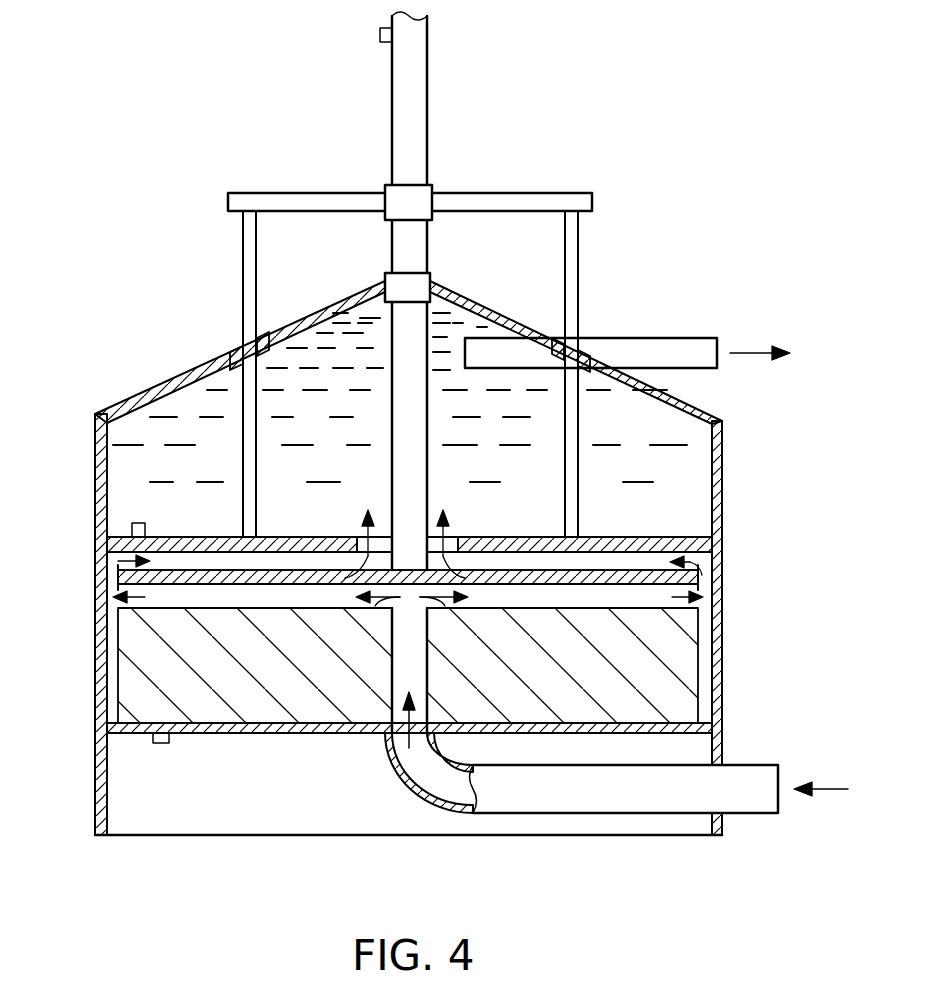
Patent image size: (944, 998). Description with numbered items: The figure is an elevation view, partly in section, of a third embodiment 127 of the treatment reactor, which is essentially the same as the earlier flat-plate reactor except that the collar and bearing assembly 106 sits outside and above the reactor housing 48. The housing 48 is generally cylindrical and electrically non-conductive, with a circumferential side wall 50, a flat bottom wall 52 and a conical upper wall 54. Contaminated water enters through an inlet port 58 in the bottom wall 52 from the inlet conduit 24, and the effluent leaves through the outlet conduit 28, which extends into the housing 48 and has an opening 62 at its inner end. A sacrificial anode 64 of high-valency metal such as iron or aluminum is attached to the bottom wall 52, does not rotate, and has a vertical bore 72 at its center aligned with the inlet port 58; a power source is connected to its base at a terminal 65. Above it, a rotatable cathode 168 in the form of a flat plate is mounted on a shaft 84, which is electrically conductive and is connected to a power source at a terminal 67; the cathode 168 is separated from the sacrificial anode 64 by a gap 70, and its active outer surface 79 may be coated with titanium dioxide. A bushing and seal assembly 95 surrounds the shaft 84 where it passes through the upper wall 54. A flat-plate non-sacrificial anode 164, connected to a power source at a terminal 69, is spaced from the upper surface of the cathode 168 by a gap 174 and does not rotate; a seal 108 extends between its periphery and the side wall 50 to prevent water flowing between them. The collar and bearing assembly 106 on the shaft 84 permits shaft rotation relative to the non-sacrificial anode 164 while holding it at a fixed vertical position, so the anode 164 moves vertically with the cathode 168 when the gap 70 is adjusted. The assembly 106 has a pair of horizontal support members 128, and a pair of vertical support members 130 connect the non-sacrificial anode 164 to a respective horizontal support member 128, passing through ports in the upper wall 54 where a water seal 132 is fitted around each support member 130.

The inlet conduit 24 is at (752, 778).
The outlet conduit 28 is at (693, 352).
The housing 48 is at (86, 388).
The side wall 50 is at (95, 448).
The bottom wall 52 is at (277, 735).
The upper wall 54 is at (182, 377).
The inlet port 58 is at (393, 762).
The opening 62 is at (458, 340).
The sacrificial anode 64 is at (682, 665).
The terminal 65 is at (161, 744).
The terminal 67 is at (380, 35).
The terminal 69 is at (131, 528).
The gap 70 is at (180, 597).
The vertical bore 72 is at (405, 657).
The outer surface 79 is at (224, 586).
The shaft 84 is at (413, 60).
The bushing and seal assembly 95 is at (400, 280).
The collar and bearing assembly 106 is at (400, 195).
The seal 108 is at (760, 538).
The third embodiment of the reactor 127 is at (616, 170).
The horizontal support members 128 is at (270, 192).
The vertical support members 130 is at (243, 248).
The water seal 132 is at (237, 350).
The non-sacrificial anode 164 is at (172, 537).
The rotatable cathode 168 is at (698, 577).
The gap 174 is at (602, 565).